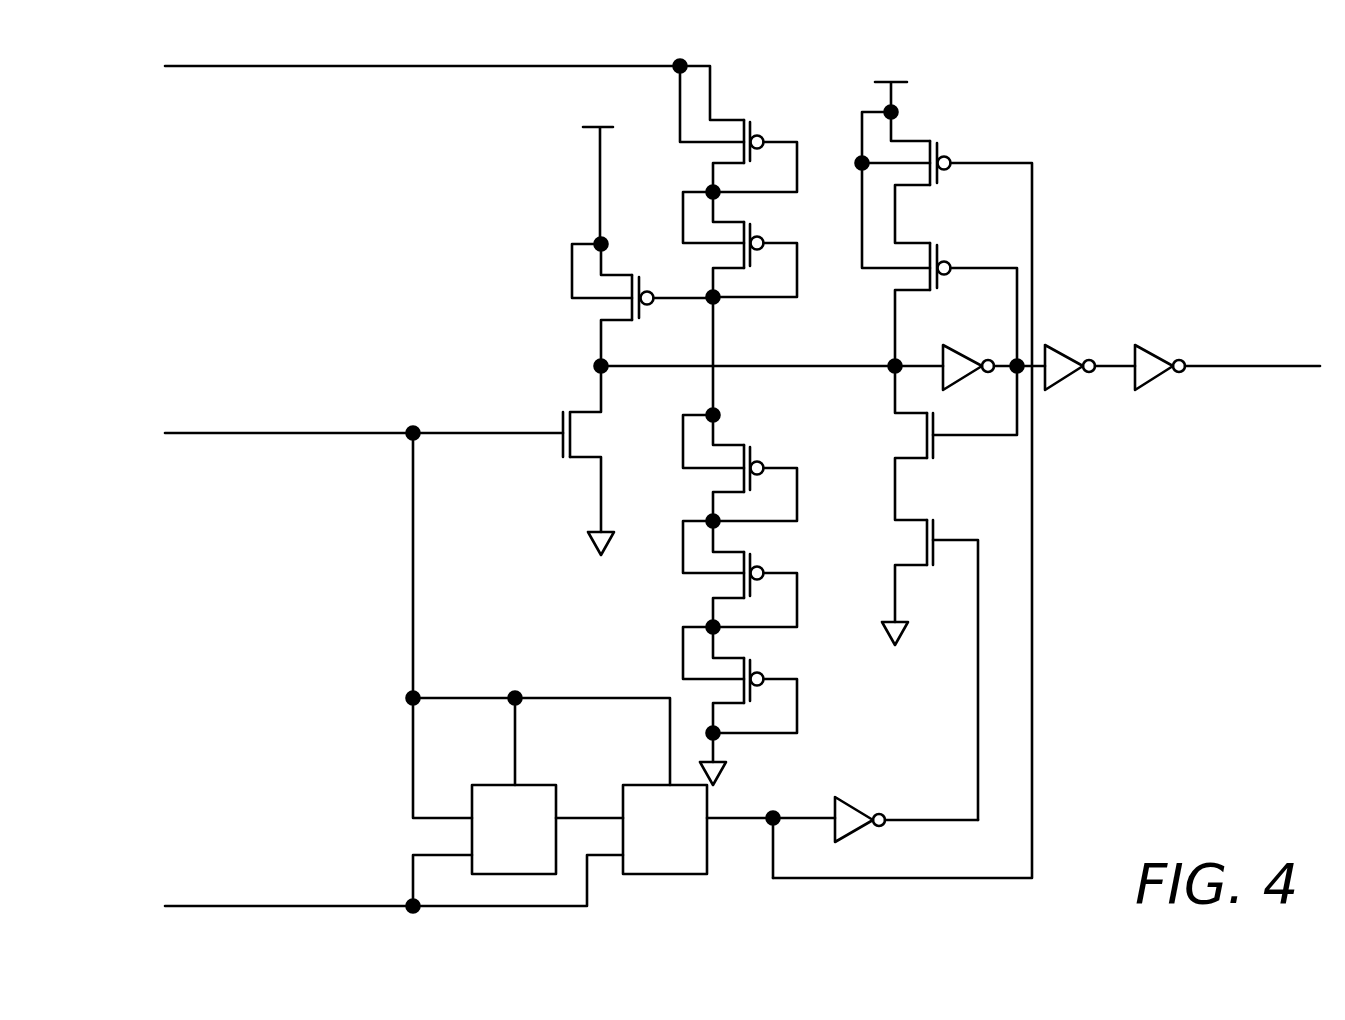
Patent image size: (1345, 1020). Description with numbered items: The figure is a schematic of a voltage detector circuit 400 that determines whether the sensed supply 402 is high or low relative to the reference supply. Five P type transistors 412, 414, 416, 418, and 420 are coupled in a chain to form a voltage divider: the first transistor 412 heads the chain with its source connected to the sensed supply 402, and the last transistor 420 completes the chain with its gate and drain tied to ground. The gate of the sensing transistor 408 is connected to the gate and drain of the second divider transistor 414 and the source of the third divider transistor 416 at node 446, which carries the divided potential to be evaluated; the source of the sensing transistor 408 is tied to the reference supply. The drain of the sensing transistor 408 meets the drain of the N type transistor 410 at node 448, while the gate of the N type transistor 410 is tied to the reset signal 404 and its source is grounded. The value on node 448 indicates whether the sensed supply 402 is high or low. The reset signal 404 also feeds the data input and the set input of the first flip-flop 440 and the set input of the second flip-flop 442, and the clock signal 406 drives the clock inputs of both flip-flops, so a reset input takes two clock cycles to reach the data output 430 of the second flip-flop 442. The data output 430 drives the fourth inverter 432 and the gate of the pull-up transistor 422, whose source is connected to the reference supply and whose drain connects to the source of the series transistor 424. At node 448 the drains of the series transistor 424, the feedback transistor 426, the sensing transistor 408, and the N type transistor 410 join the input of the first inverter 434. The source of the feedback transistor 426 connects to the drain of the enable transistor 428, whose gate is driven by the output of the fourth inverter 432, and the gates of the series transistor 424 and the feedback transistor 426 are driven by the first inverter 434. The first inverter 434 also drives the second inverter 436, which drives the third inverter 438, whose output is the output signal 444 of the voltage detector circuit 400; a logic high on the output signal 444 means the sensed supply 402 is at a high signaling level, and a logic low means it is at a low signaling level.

The voltage detector circuit 400 is at (1078, 640).
The VDDQ 402 is at (348, 67).
The reset signal (RESET) 404 is at (232, 434).
The clock signal (CLOCK) 406 is at (380, 905).
The transistor T1 408 is at (676, 247).
The N type transistor T2 410 is at (664, 422).
The P type transistor T3 412 is at (789, 94).
The P type transistor T4 414 is at (834, 222).
The P type transistor T5 416 is at (792, 421).
The P type transistor T6 418 is at (698, 585).
The P type transistor T11 420 is at (867, 627).
The transistor T7 422 is at (967, 116).
The transistor T8 424 is at (974, 219).
The transistor T9 426 is at (902, 435).
The transistor T10 428 is at (902, 543).
The data output 430 is at (812, 792).
The inverter I4 432 is at (931, 787).
The inverter I1 434 is at (970, 350).
The inverter I2 436 is at (1068, 390).
The inverter I3 438 is at (1158, 390).
The flip-flop U1 440 is at (497, 782).
The flip-flop U2 442 is at (632, 782).
The output signal (HI_VDDQ) 444 is at (1237, 367).
The node 446 is at (692, 302).
The node 448 is at (792, 367).